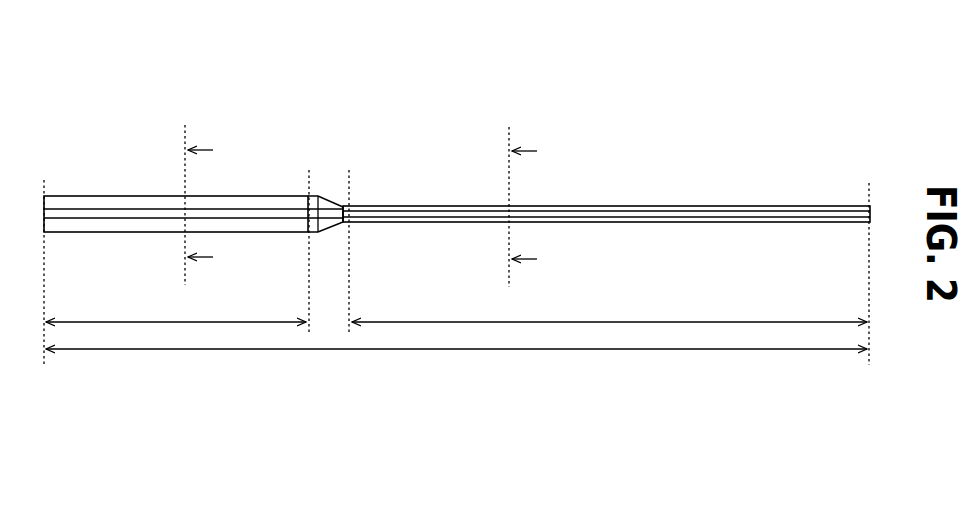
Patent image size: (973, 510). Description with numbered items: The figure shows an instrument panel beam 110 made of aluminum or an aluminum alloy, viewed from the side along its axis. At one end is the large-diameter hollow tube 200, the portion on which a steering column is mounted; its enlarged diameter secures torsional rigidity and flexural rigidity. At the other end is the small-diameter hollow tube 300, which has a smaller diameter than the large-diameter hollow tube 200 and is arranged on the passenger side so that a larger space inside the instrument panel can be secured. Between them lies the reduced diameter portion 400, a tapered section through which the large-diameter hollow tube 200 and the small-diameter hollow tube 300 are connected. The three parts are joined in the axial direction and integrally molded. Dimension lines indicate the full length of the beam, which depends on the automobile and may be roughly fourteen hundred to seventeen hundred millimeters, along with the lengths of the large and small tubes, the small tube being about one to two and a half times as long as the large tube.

The instrument panel beam 110 is at (706, 132).
The large-diameter hollow tube 200 is at (108, 195).
The small-diameter hollow tube 300 is at (616, 206).
The reduced diameter portion 400 is at (319, 195).